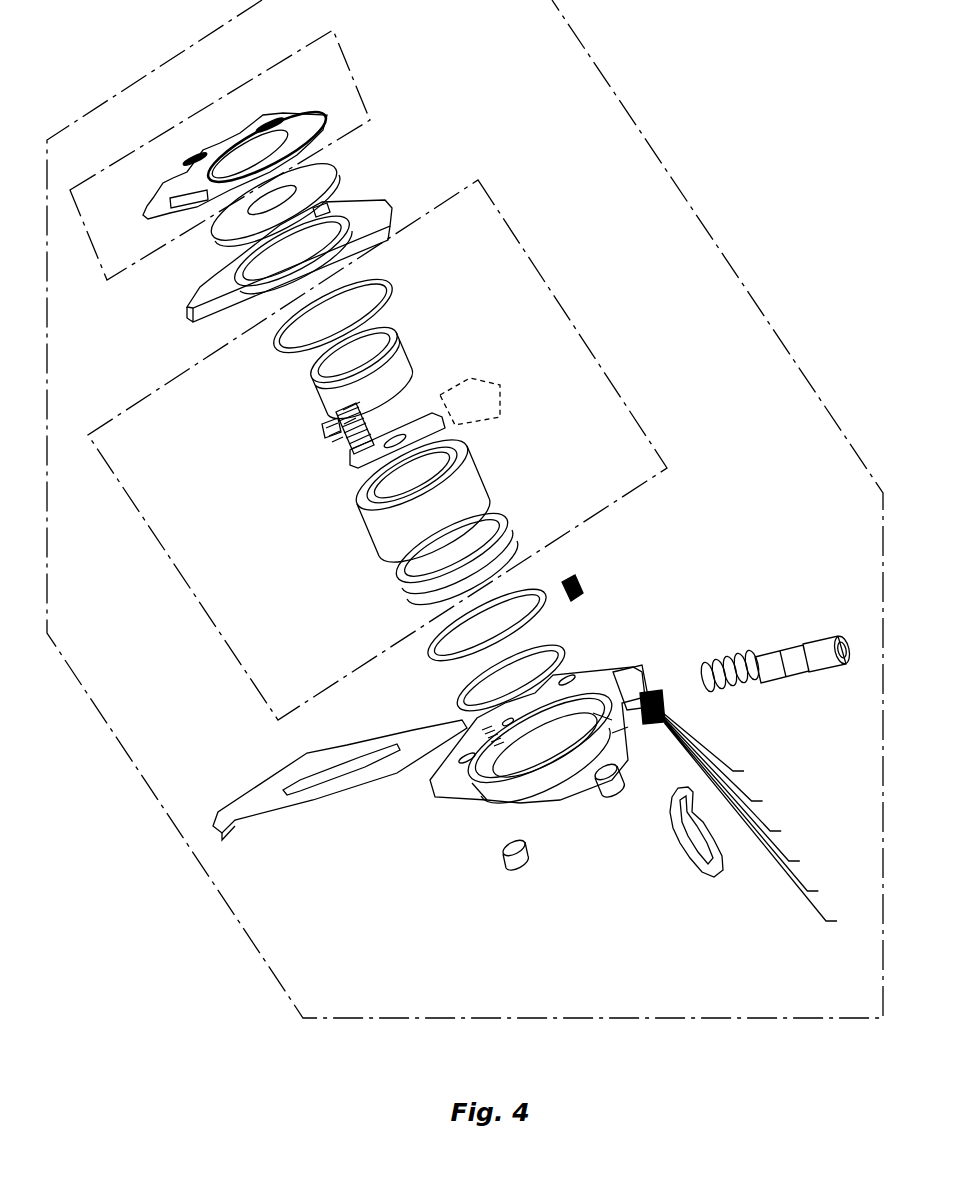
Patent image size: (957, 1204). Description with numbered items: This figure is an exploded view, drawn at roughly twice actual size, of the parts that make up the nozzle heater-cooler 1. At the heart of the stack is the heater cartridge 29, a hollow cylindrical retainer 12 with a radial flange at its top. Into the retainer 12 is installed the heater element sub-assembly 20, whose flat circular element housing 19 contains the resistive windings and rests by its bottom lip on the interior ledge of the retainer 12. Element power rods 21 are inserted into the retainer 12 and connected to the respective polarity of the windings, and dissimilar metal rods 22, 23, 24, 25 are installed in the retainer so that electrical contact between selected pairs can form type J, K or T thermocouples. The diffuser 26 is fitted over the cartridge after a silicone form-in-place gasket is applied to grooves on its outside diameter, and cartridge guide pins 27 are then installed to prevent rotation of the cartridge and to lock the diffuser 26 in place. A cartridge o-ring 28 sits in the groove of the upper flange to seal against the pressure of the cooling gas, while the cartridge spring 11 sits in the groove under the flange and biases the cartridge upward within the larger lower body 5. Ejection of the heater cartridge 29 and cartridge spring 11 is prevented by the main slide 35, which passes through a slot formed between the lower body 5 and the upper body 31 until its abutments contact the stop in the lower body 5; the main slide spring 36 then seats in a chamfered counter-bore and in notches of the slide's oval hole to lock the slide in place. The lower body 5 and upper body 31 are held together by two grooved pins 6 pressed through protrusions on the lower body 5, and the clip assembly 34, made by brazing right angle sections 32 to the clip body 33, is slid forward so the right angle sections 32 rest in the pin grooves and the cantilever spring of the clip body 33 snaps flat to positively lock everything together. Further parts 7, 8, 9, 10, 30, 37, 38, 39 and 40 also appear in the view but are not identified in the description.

The nozzle heater-cooler 1 is at (465, 509).
The lower body 5 is at (612, 668).
The grooved pins 6 is at (508, 880).
The electrical lead 7 is at (767, 824).
The seal 8 is at (618, 735).
The sealing ring 9 is at (565, 655).
The sealing ring 10 is at (430, 667).
The cartridge spring 11 is at (400, 592).
The retainer 12 is at (480, 490).
The element housing 19 is at (390, 436).
The heater element sub-assembly 20 is at (487, 396).
The element power rods 21 is at (345, 412).
The dissimilar metal rod 22 is at (341, 455).
The dissimilar metal rod 23 is at (333, 443).
The dissimilar metal rod 24 is at (330, 438).
The dissimilar metal rod 25 is at (326, 433).
The diffuser 26 is at (398, 350).
The cartridge guide pins 27 is at (323, 430).
The cartridge o-ring 28 is at (388, 300).
The heater cartridge 29 is at (377, 450).
The bearing ring 30 is at (193, 285).
The upper body 31 is at (372, 202).
The right angle sections 32 is at (262, 158).
The clip body 33 is at (240, 128).
The clip assembly 34 is at (239, 153).
The main slide 35 is at (287, 810).
The main slide spring 36 is at (754, 657).
The clip 37 is at (712, 870).
The screw 38 is at (574, 577).
The connector 39 is at (650, 670).
The plunger 40 is at (828, 644).